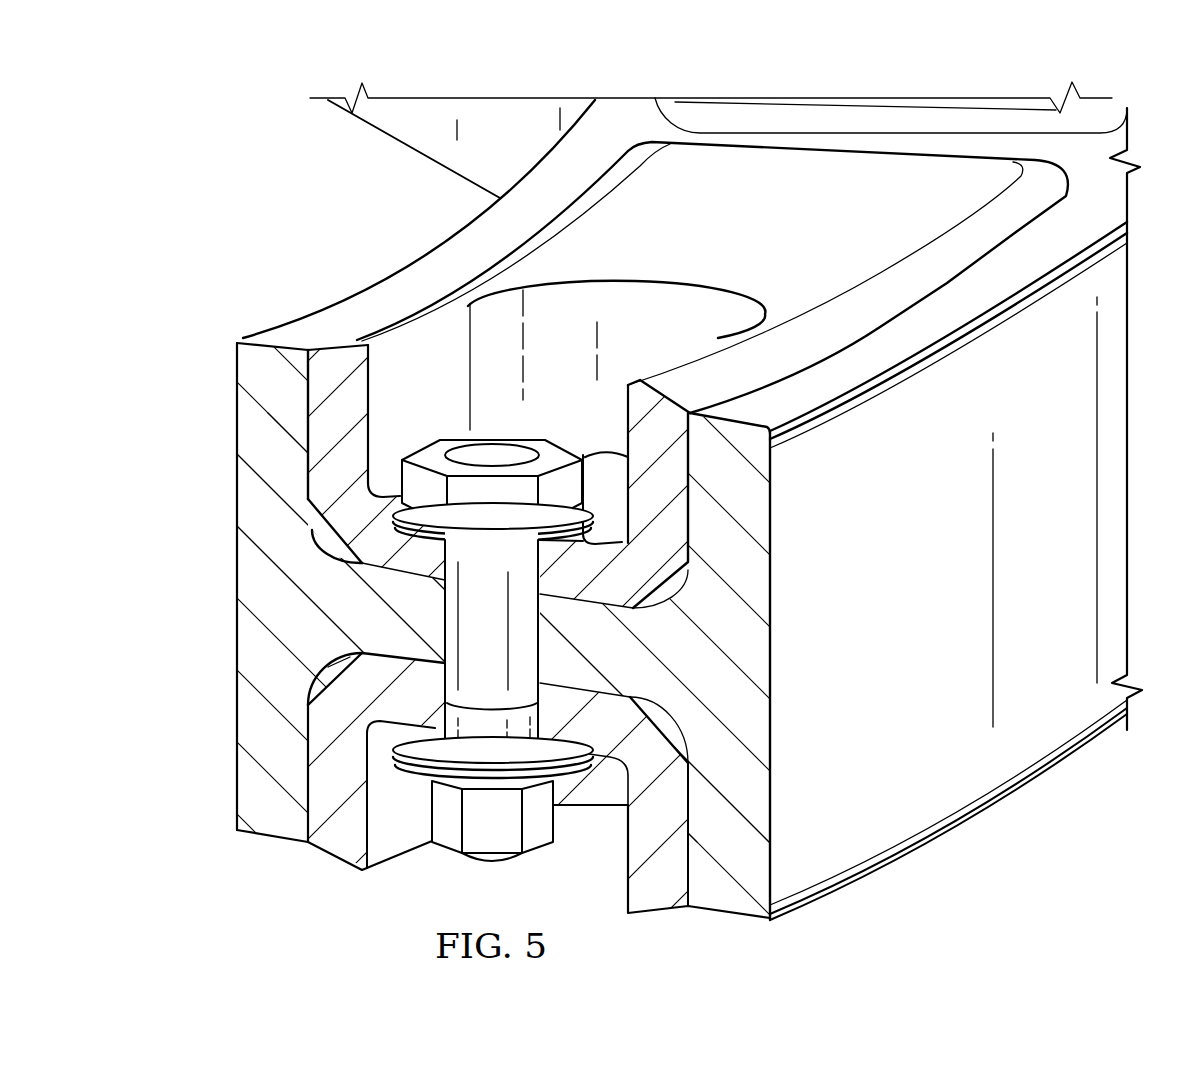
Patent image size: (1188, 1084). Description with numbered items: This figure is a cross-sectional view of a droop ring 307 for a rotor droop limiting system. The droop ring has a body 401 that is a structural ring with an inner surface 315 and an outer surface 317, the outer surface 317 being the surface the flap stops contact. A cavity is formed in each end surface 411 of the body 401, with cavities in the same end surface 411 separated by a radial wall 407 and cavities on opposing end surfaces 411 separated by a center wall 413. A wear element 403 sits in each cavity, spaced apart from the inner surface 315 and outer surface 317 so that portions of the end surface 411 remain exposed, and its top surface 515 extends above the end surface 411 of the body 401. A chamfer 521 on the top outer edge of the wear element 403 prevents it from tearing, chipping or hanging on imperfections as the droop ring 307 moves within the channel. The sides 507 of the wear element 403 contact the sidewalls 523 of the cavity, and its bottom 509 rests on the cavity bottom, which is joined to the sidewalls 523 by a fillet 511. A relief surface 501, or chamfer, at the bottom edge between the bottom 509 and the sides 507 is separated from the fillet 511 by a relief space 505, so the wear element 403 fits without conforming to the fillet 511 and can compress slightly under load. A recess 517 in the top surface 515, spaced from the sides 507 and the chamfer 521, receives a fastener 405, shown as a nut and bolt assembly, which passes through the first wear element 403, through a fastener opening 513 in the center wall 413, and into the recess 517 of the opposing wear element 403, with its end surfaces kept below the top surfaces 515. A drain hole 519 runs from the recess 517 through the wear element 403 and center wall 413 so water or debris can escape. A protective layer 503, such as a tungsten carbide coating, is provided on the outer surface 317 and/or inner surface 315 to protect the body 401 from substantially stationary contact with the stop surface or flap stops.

The droop ring 307 is at (270, 90).
The wear element 403 is at (801, 165).
The radial wall 407 is at (917, 143).
The top surface 515 is at (643, 172).
The recess 517 is at (627, 293).
The chamfer 521 is at (863, 290).
The sidewall 523 is at (665, 420).
The drain hole 519 is at (598, 462).
The end surface 411 is at (306, 318).
The sides 507 is at (306, 398).
The relief space 505 is at (303, 525).
The relief surface 501 is at (312, 533).
The fillet 511 is at (337, 558).
The inner surface 315 is at (239, 644).
The body 401 is at (237, 784).
The bottom 509 is at (410, 588).
The fastener opening 513 is at (546, 626).
The center wall 413 is at (565, 678).
The fastener 405 is at (510, 755).
The protective layer 503 is at (903, 822).
The outer surface 317 is at (770, 880).